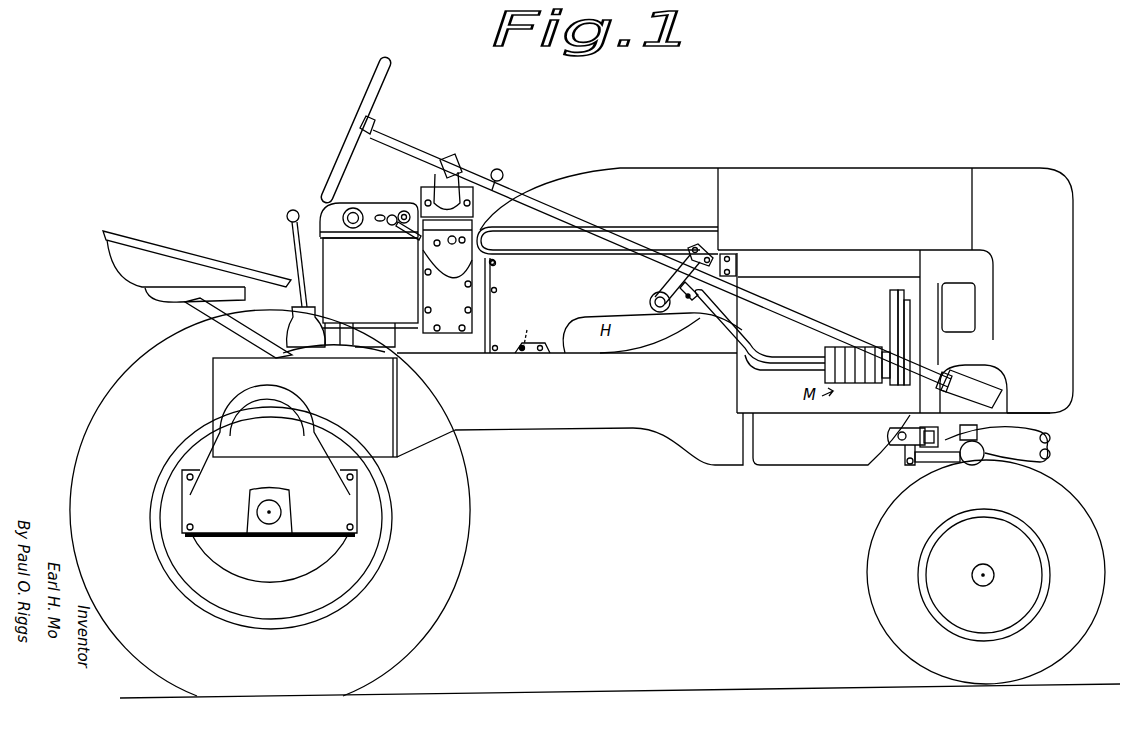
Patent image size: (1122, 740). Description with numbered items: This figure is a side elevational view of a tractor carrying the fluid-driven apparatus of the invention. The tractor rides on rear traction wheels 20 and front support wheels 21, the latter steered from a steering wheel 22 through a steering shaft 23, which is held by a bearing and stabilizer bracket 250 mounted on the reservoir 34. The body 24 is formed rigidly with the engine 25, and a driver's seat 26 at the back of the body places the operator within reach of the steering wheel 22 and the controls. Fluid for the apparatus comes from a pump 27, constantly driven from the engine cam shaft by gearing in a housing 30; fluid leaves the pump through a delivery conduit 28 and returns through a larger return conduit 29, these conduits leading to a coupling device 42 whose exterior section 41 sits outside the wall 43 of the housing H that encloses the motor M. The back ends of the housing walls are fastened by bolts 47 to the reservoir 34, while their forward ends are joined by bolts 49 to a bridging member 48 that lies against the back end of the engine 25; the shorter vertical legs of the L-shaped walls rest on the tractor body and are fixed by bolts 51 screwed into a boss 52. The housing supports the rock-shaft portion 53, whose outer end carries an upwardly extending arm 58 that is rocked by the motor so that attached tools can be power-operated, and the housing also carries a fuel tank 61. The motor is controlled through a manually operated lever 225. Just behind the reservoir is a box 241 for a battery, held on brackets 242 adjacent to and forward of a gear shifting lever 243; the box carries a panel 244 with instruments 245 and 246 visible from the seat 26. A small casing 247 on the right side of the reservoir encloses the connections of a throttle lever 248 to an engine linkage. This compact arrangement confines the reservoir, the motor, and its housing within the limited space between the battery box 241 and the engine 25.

The rear traction wheels 20 is at (445, 550).
The front support wheels 21 is at (868, 565).
The steering wheel 22 is at (378, 74).
The steering shaft 23 is at (545, 208).
The body 24 is at (562, 428).
The engine 25 is at (836, 260).
The driver's seat 26 is at (163, 262).
The pump 27 is at (856, 388).
The conduit 28 is at (765, 355).
The conduit 29 is at (750, 360).
The housing 30 is at (888, 312).
The reservoir 34 is at (450, 345).
The section of coupling device 41 is at (692, 302).
The coupling device 42 is at (684, 300).
The wall 43 is at (652, 333).
The bolts 47 is at (495, 263).
The bridging member 48 is at (740, 268).
The bolts 49 is at (724, 254).
The bolts 51 is at (545, 352).
The boss 52 is at (526, 326).
The rock-shaft portion 53 is at (650, 302).
The arm 58 is at (672, 276).
The fuel tank 61 is at (636, 188).
The manually operated lever 225 is at (492, 172).
The box 241 is at (338, 262).
The brackets 242 is at (360, 333).
The gear shifting lever 243 is at (290, 236).
The panel 244 is at (380, 214).
The instrument 245 is at (353, 209).
The instrument 246 is at (404, 211).
The small casing 247 is at (447, 260).
The throttle lever 248 is at (406, 240).
The bearing and stabilizer bracket 250 is at (448, 200).